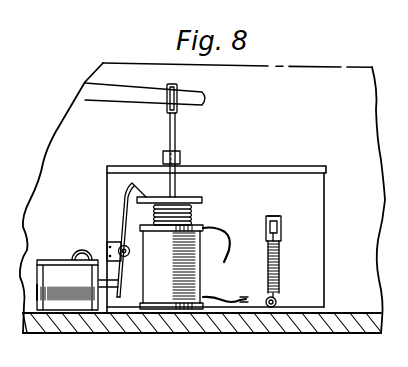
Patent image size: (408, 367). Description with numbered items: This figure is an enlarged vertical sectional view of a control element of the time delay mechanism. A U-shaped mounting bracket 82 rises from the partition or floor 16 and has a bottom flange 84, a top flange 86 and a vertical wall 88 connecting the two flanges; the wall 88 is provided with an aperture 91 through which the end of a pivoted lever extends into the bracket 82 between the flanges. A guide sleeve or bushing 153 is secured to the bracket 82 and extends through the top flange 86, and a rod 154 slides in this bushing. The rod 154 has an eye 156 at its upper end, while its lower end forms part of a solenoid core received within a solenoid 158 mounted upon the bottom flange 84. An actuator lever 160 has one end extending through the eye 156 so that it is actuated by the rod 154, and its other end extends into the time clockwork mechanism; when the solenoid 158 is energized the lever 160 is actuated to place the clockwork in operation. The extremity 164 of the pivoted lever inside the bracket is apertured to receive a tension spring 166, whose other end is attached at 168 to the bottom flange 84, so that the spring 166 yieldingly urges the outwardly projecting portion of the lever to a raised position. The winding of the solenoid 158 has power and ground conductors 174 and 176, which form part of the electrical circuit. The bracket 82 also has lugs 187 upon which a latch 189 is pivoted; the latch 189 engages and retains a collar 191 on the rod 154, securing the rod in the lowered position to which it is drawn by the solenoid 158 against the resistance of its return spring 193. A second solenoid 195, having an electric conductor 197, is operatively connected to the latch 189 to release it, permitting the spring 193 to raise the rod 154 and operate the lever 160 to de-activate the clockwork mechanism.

The partition or floor 16 is at (125, 316).
The U-shaped mounting bracket 82 is at (102, 172).
The bottom flange 84 is at (300, 313).
The top flange 86 is at (258, 168).
The vertical wall 88 is at (319, 219).
The aperture 91 is at (279, 218).
The guide sleeve or bushing 153 is at (182, 164).
The rod 154 is at (176, 144).
The eye 156 is at (178, 87).
The solenoid 158 is at (171, 267).
The actuator lever 160 is at (135, 94).
The extremity of the lever 164 is at (266, 219).
The tension spring 166 is at (278, 265).
The spring attachment 168 is at (276, 305).
The power conductor 174 is at (230, 246).
The ground conductor 176 is at (231, 302).
The lugs 187 is at (119, 248).
The latch 189 is at (123, 218).
The collar 191 is at (198, 198).
The return spring 193 is at (186, 221).
The solenoid 195 is at (77, 295).
The electric conductor 197 is at (42, 259).